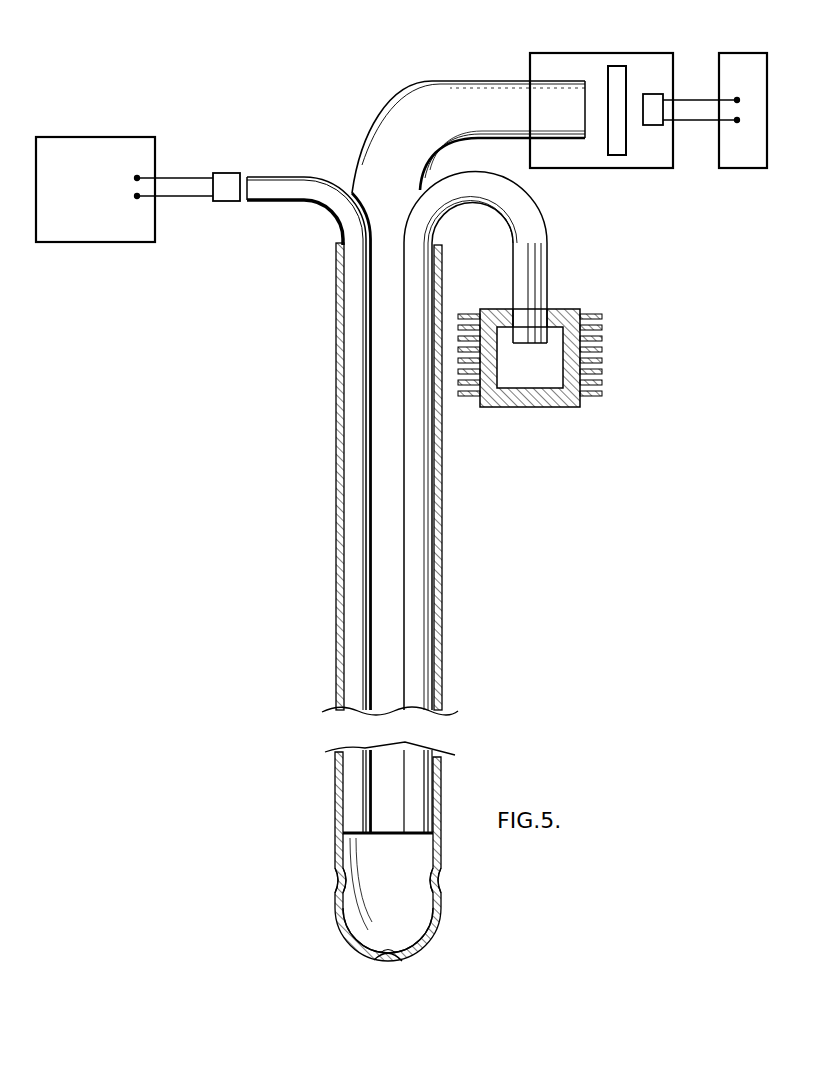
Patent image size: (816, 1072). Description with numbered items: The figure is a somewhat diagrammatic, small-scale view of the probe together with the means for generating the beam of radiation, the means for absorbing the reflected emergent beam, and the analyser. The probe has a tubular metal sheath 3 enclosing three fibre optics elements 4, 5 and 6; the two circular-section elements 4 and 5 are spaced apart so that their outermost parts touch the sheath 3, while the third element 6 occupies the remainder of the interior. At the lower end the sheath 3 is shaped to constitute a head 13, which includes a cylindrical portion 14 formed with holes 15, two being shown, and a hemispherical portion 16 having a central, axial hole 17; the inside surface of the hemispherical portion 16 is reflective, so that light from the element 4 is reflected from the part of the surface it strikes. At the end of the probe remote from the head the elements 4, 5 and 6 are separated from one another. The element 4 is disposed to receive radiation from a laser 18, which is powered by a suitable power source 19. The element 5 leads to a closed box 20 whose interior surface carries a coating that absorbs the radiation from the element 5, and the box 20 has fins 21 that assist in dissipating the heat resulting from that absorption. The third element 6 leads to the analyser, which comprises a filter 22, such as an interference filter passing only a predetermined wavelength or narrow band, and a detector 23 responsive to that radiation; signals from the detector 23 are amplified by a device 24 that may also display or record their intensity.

The tubular metal sheath 3 is at (440, 543).
The fibre optics element 4 is at (270, 190).
The fibre optics element 5 is at (520, 253).
The fibre optics element 6 is at (420, 125).
The head 13 is at (448, 913).
The cylindrical portion 14 is at (440, 853).
The holes 15 is at (338, 877).
The hemispherical portion 16 is at (427, 948).
The central axial hole 17 is at (388, 958).
The laser 18 is at (222, 183).
The power source 19 is at (85, 155).
The closed box 20 is at (530, 398).
The fins 21 is at (585, 318).
The filter 22 is at (613, 77).
The detector 23 is at (651, 105).
The amplifying device 24 is at (742, 70).